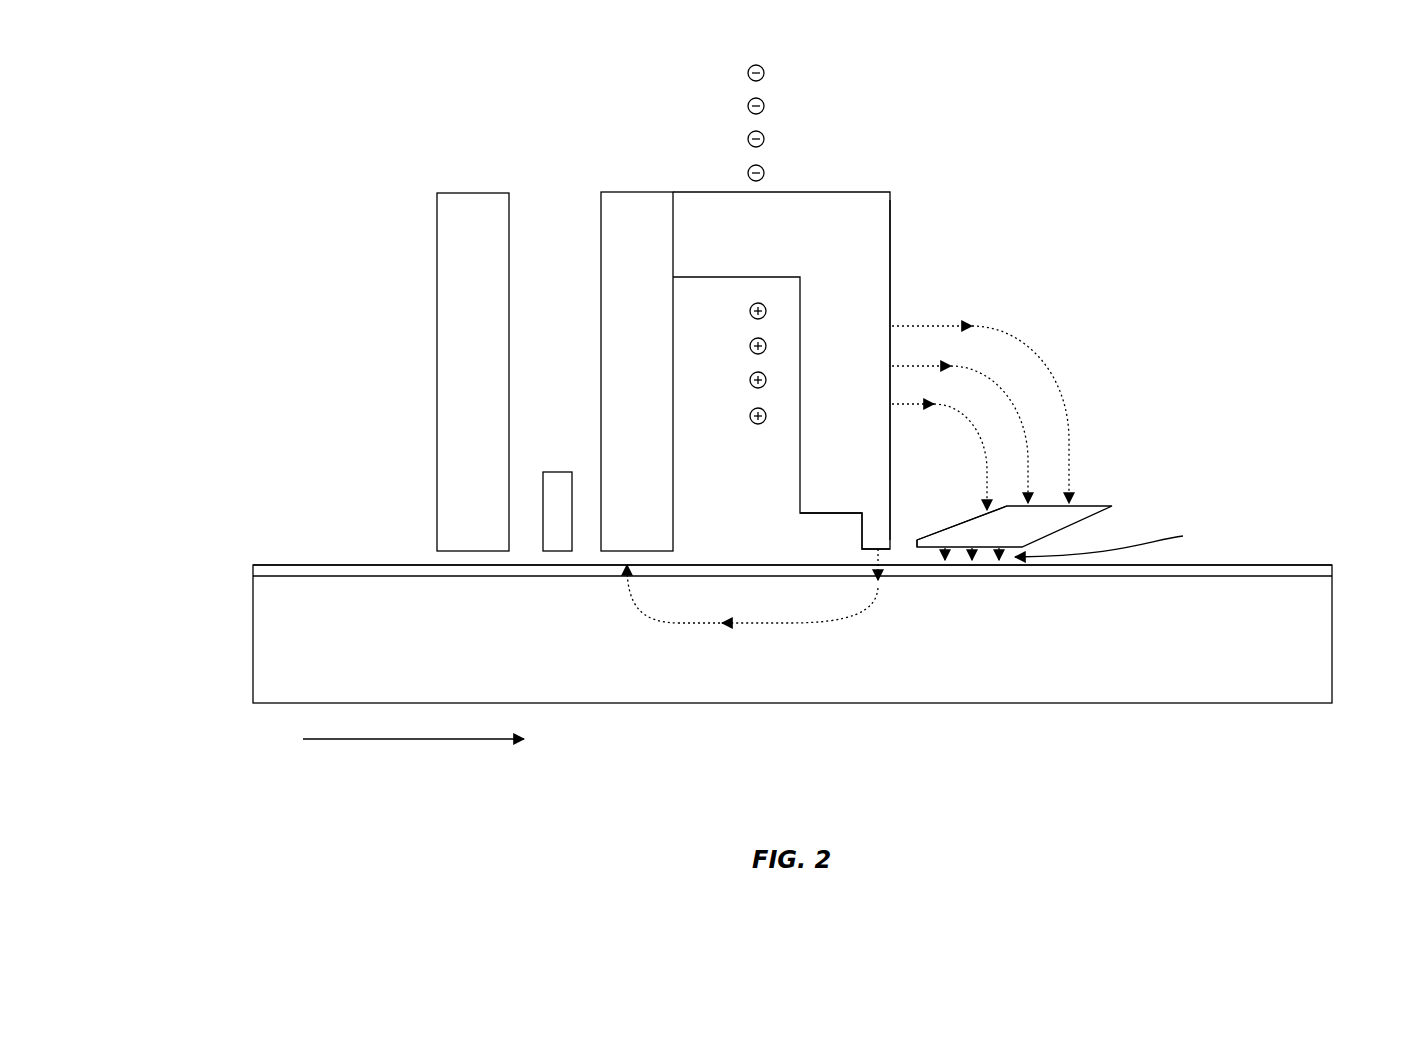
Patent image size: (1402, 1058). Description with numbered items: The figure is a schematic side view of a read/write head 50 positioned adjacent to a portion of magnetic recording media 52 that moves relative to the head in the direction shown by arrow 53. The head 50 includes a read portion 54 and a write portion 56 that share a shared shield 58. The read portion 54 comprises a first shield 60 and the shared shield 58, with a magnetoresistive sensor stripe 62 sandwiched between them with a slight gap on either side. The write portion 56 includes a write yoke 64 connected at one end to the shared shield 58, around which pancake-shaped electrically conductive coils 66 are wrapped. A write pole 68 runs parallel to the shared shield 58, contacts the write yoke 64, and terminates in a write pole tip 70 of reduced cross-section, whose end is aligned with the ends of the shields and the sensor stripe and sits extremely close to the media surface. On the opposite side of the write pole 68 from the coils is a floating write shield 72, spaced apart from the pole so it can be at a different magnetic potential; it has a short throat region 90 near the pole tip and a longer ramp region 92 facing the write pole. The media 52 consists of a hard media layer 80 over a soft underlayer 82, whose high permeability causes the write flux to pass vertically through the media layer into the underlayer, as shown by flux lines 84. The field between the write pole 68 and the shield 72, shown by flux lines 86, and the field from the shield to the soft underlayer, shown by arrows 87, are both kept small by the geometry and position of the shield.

The read/write head 50 is at (1064, 224).
The magnetic recording media 52 is at (234, 622).
The arrow 53 is at (396, 740).
The read portion 54 is at (540, 158).
The write portion 56 is at (919, 156).
The shared shield 58 is at (631, 211).
The first shield 60 is at (446, 259).
The magnetoresistive sensor stripe 62 is at (557, 481).
The write yoke 64 is at (760, 241).
The pancake-shaped electrically conductive coils 66 is at (740, 121).
The write pole 68 is at (880, 311).
The write pole tip 70 is at (872, 530).
The floating write shield 72 is at (1058, 523).
The media layer 80 is at (1333, 562).
The soft underlayer 82 is at (1334, 617).
The flux lines 84 is at (879, 555).
The flux lines 86 is at (1047, 360).
The arrows 87 is at (1107, 532).
The throat region 90 is at (910, 528).
The ramp region 92 is at (968, 516).